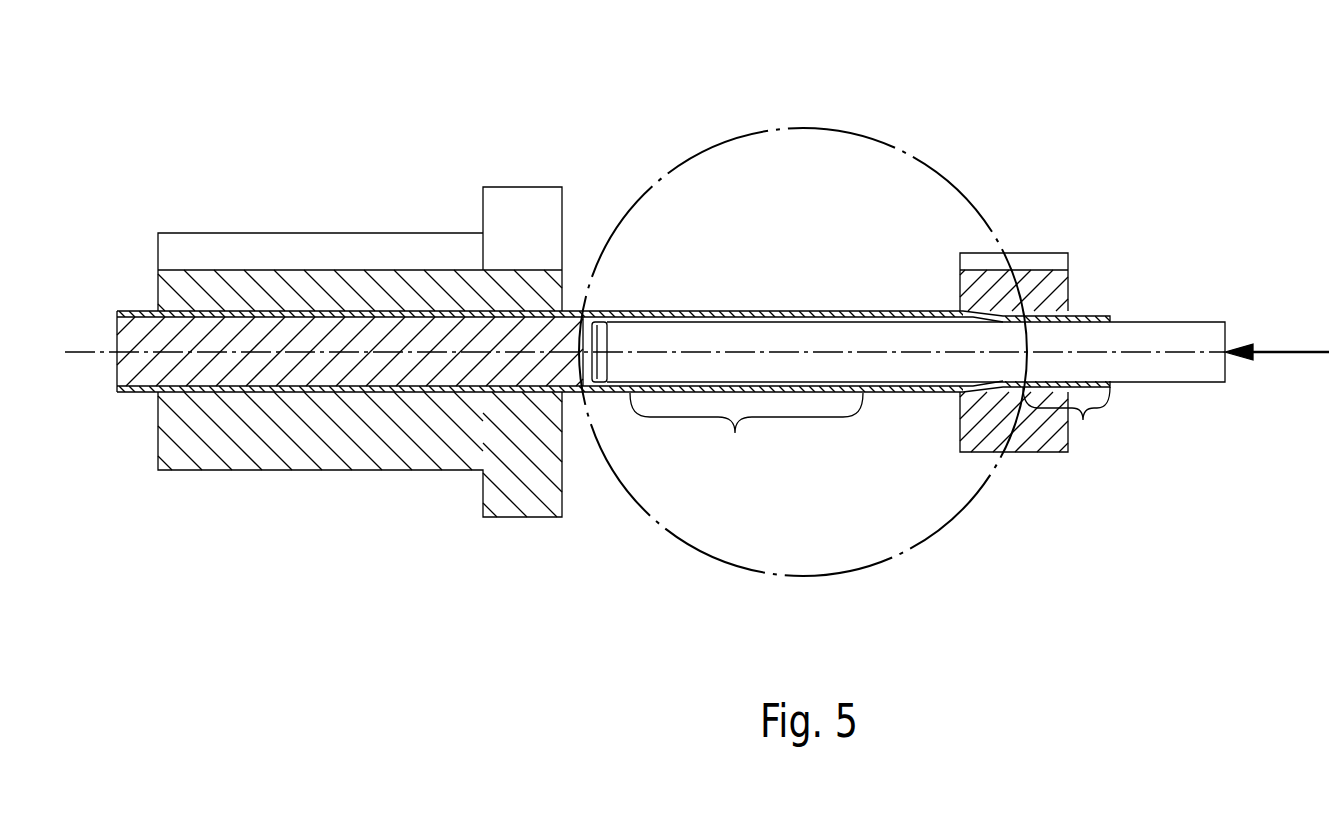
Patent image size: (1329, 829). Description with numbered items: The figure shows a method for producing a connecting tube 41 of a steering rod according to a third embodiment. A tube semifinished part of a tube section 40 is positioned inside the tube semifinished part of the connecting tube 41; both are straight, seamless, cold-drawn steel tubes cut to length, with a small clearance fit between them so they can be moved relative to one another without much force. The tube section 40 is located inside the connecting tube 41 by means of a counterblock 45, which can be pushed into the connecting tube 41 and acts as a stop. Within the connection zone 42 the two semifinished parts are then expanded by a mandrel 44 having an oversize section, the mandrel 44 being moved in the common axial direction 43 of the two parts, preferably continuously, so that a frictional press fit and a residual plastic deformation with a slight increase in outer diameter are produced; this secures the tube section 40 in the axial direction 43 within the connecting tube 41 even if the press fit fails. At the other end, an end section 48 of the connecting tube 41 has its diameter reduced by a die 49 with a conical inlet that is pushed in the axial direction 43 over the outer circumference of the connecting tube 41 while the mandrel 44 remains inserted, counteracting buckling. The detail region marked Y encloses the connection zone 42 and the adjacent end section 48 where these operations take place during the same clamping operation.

The tube section 40 is at (690, 323).
The connecting tube 41 is at (893, 313).
The connection zone 42 is at (746, 437).
The axial direction 43 is at (1278, 356).
The mandrel 44 is at (627, 362).
The counterblock 45 is at (122, 325).
The end section 48 is at (1069, 428).
The die 49 is at (1086, 257).
The detail region Y is at (907, 575).